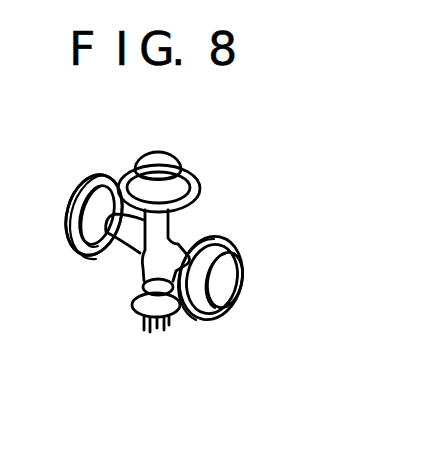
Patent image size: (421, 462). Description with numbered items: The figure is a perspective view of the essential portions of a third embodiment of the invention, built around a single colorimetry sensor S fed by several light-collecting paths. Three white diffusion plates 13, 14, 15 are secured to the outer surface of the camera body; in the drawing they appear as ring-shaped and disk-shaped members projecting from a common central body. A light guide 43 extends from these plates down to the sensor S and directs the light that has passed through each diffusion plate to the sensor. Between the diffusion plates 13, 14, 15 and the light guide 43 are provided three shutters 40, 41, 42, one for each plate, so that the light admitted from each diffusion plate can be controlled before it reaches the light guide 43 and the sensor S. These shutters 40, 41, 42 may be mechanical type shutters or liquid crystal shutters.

The white diffusion plate 14 is at (162, 152).
The shutter 41 is at (200, 181).
The white diffusion plate 15 is at (84, 184).
The shutter 42 is at (80, 257).
The shutter 40 is at (218, 233).
The white diffusion plate 13 is at (228, 284).
The light guide 43 is at (147, 262).
The colorimetry sensor S is at (157, 333).